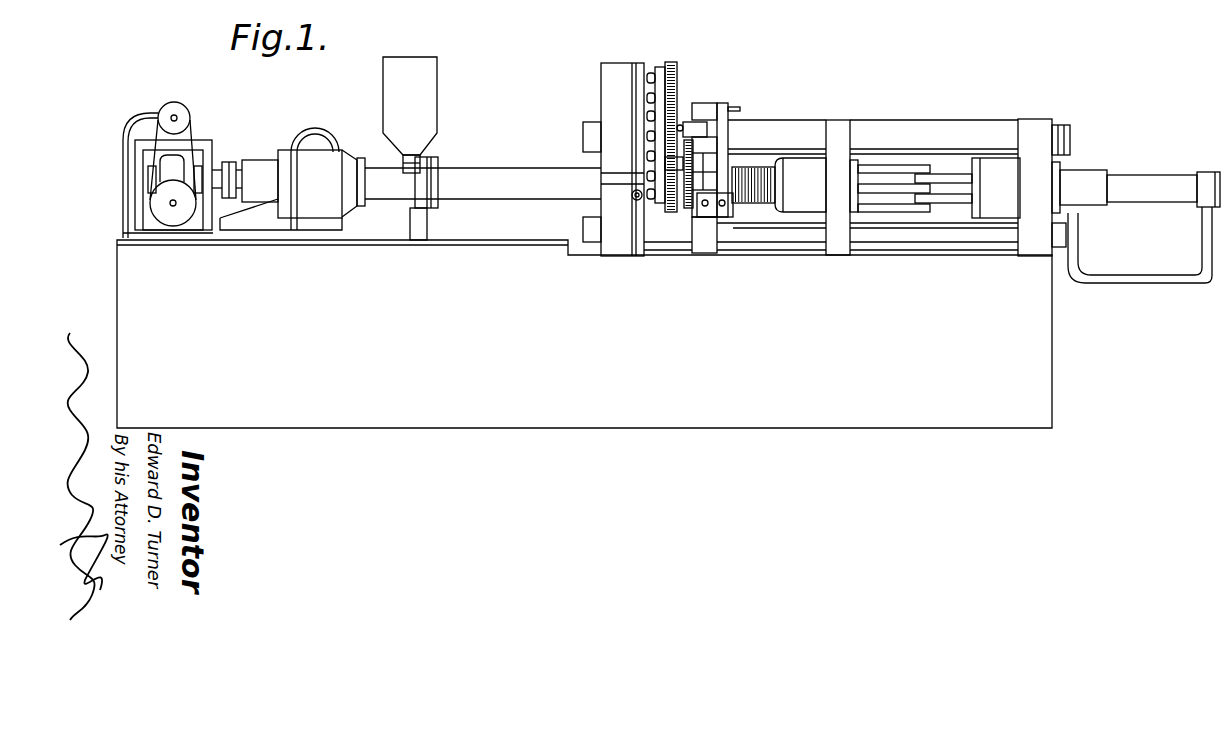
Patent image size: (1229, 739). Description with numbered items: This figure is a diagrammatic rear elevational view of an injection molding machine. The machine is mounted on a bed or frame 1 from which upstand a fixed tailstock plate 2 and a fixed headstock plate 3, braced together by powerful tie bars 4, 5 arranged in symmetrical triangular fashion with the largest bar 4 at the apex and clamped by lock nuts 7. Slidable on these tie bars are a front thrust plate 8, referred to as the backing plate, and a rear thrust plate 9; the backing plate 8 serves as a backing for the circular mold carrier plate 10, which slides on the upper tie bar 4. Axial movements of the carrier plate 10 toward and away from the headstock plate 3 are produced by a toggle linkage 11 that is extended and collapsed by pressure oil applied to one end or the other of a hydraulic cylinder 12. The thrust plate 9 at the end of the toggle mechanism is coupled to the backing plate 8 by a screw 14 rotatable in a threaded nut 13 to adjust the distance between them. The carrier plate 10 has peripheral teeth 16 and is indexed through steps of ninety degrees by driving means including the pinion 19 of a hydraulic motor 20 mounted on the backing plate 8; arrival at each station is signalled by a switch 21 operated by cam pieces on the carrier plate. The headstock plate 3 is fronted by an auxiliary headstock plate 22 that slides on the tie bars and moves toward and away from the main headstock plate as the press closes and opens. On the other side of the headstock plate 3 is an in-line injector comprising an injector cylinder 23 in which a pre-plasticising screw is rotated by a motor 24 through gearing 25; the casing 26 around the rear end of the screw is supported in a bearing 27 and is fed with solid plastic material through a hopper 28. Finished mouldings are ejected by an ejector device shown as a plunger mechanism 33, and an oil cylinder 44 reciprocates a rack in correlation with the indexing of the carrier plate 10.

The bed or frame 1 is at (1034, 358).
The fixed tailstock plate 2 is at (1032, 128).
The fixed headstock plate 3 is at (617, 242).
The tie bar 4 is at (963, 133).
The tie bar 5 is at (923, 237).
The clamping lock nuts 7 is at (583, 130).
The front thrust plate (backing plate) 8 is at (708, 232).
The rear thrust plate 9 is at (840, 246).
The mold carrier plate or disc 10 is at (673, 62).
The toggle linkage 11 is at (896, 167).
The hydraulic cylinder 12 is at (1080, 185).
The threaded nut 13 is at (808, 197).
The screw 14 is at (752, 163).
The peripheral teeth 16 is at (680, 80).
The pinion 19 is at (688, 212).
The hydraulic motor 20 is at (732, 215).
The switch 21 is at (696, 128).
The auxiliary headstock plate 22 is at (640, 62).
The injector cylinder 23 is at (509, 182).
The motor 24 is at (176, 102).
The gearing 25 is at (173, 224).
The casing 26 is at (389, 192).
The bearing 27 is at (322, 214).
The hopper 28 is at (422, 97).
The plunger mechanism (ejector device) 33 is at (733, 106).
The oil cylinder 44 is at (630, 198).